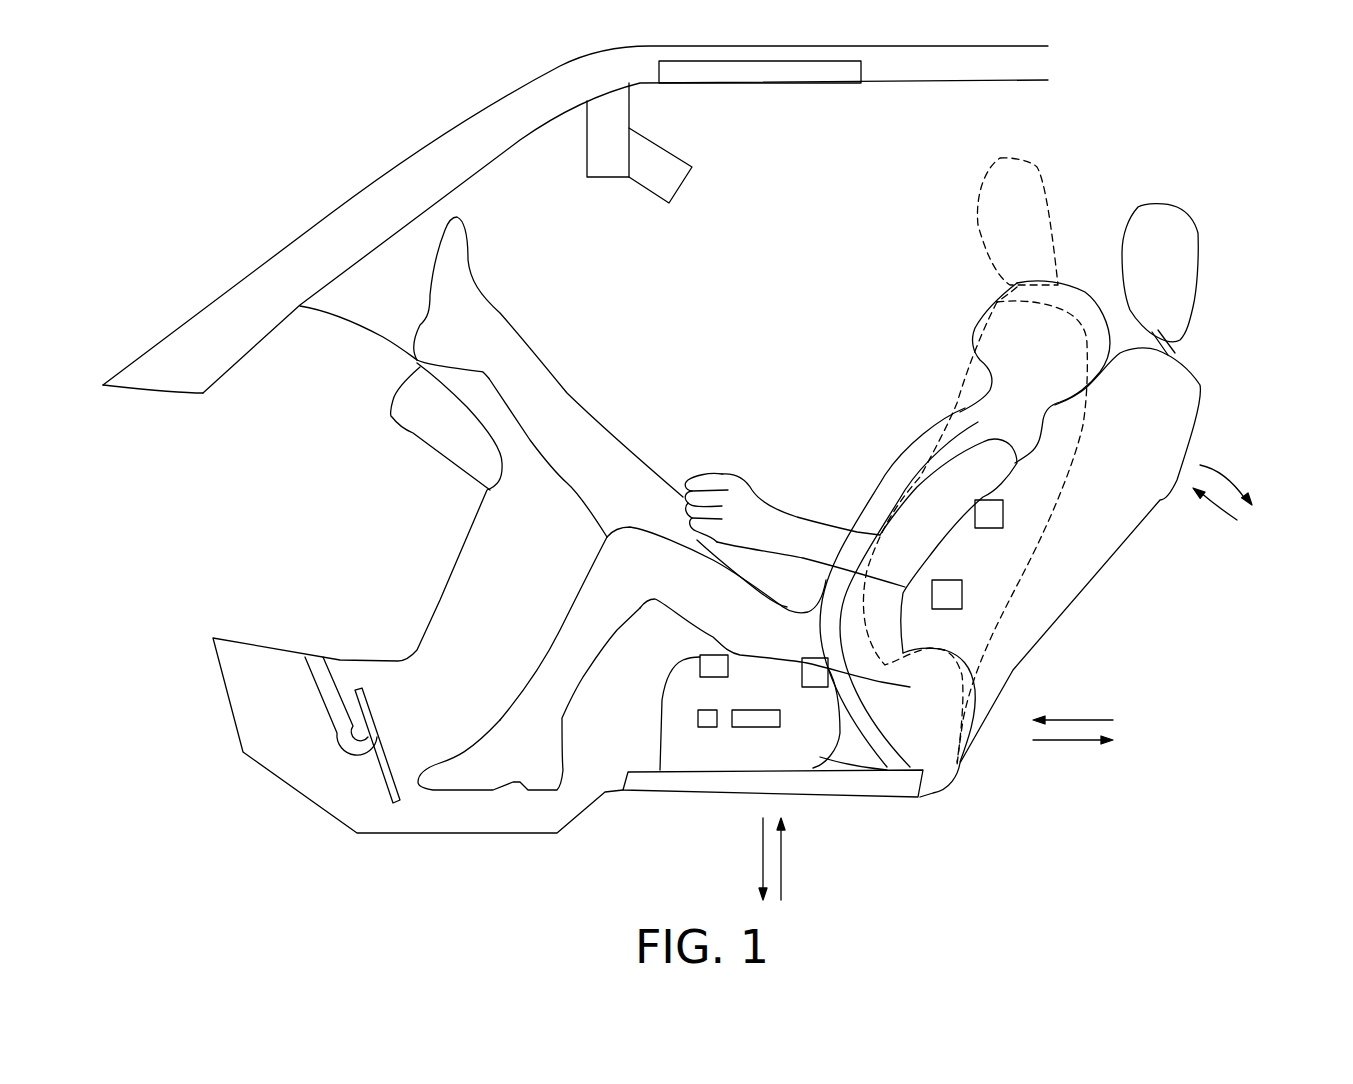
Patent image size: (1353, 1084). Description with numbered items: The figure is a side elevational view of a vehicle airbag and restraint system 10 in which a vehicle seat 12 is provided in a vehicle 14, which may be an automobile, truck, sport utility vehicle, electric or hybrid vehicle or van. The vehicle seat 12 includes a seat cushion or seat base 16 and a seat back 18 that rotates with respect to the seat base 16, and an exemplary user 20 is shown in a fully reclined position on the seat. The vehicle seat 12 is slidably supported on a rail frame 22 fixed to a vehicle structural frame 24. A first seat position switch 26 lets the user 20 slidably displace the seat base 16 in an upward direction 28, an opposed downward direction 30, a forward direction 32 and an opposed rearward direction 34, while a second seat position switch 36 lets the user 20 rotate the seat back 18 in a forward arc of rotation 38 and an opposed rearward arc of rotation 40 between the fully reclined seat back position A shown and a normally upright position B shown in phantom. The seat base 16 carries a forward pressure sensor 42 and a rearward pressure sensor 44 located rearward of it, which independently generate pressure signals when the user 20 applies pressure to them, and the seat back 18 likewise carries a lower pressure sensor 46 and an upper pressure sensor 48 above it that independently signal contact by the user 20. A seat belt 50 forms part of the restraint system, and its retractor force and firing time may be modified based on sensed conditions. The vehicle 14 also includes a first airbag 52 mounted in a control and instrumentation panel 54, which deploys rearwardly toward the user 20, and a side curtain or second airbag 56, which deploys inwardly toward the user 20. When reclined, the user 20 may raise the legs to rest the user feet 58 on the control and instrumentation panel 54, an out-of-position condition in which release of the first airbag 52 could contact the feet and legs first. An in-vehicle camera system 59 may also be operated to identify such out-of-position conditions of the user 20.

The vehicle airbag and restraint system 10 is at (1077, 105).
The vehicle seat 12 is at (1228, 383).
The vehicle 14 is at (432, 140).
The seat base 16 is at (800, 748).
The seat back 18 is at (1063, 577).
The user 20 is at (963, 428).
The rail frame 22 is at (737, 783).
The vehicle structural frame 24 is at (580, 813).
The first seat position switch 26 is at (753, 725).
The upward direction 28 is at (781, 860).
The downward direction 30 is at (763, 843).
The forward direction 32 is at (1087, 720).
The rearward direction 34 is at (1068, 742).
The second seat position switch 36 is at (698, 717).
The forward arc of rotation 38 is at (1227, 510).
The rearward arc of rotation 40 is at (1220, 473).
The forward pressure sensor 42 is at (708, 667).
The rearward pressure sensor 44 is at (817, 672).
The lower pressure sensor 46 is at (947, 593).
The upper pressure sensor 48 is at (993, 513).
The seat belt 50 is at (866, 484).
The first airbag 52 is at (480, 447).
The control and instrumentation panel 54 is at (338, 315).
The second airbag 56 is at (762, 75).
The user feet 58 is at (463, 300).
The in-vehicle camera system 59 is at (610, 158).
The fully reclined seat back position A is at (1188, 217).
The normally upright position B is at (1036, 165).